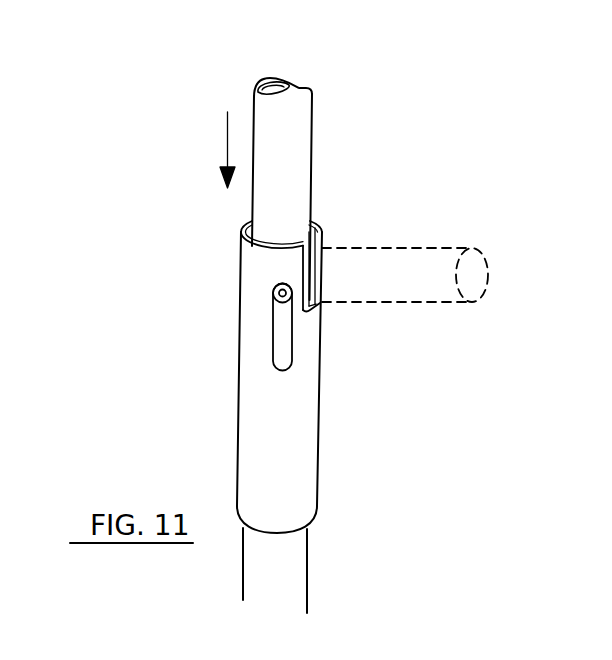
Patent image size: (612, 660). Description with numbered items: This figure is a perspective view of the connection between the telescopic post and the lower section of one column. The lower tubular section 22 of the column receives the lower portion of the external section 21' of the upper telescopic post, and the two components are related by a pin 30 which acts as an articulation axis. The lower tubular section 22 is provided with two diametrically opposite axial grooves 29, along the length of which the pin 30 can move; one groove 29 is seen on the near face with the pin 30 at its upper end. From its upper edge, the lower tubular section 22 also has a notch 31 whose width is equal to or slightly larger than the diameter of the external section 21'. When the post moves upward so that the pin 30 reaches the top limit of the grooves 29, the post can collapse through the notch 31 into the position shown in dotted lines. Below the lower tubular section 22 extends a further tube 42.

The external section 21' is at (327, 189).
The lower tubular section 22 is at (315, 425).
The axial grooves 29 is at (282, 348).
The pin 30 is at (278, 292).
The notch 31 is at (320, 233).
The lower tube 42 is at (288, 568).